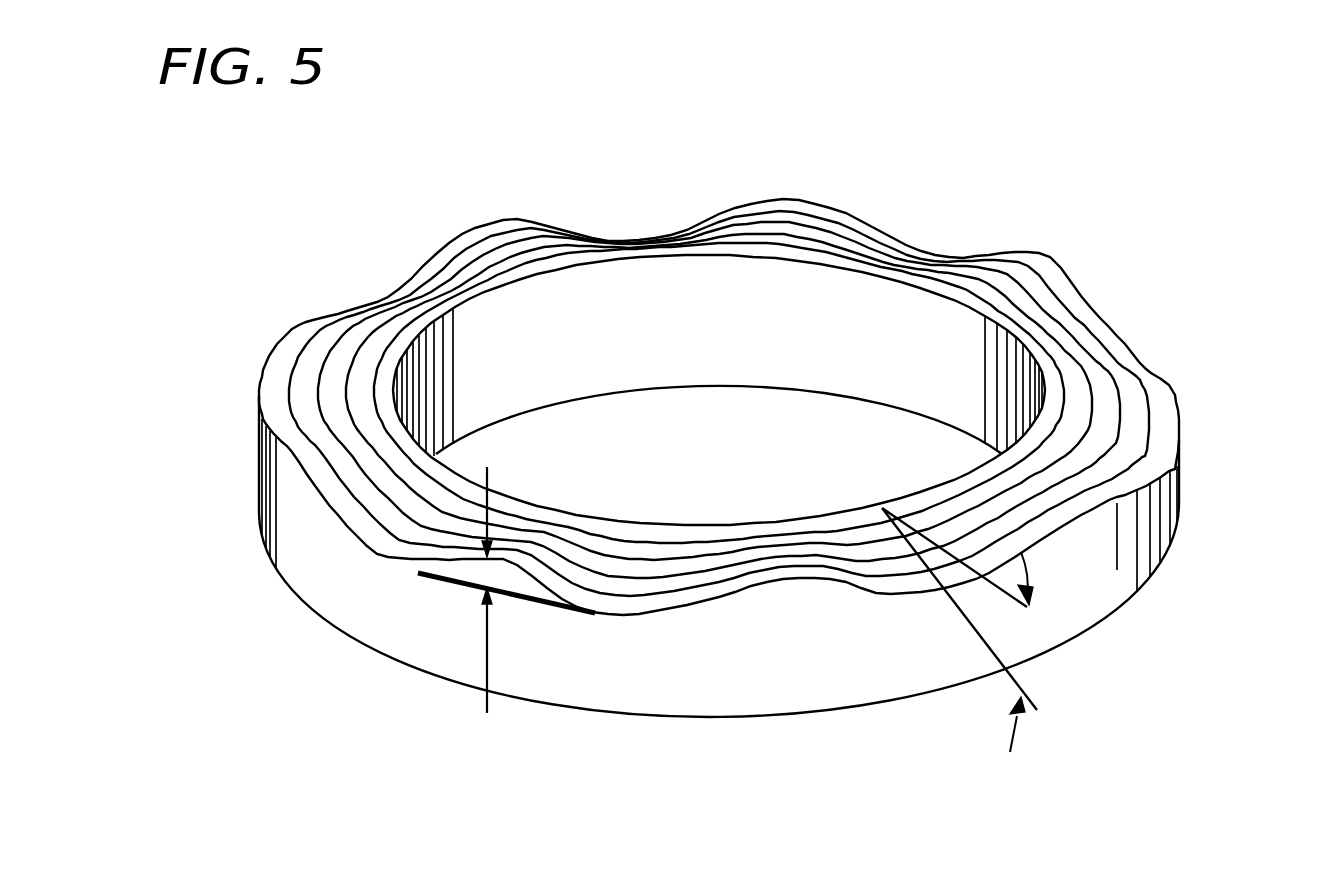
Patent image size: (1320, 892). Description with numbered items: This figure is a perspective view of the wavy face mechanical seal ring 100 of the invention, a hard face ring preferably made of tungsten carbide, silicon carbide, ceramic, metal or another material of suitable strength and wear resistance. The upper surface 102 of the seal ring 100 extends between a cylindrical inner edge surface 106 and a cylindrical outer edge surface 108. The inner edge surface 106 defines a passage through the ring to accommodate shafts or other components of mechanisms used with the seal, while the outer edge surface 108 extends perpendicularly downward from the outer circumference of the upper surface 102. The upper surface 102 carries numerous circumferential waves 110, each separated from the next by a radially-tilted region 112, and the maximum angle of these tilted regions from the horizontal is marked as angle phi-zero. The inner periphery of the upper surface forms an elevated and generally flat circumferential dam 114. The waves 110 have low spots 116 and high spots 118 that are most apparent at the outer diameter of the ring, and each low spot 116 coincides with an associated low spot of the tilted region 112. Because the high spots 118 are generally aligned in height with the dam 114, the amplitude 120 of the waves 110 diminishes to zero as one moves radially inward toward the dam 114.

The seal ring 100 is at (1133, 242).
The upper surface 102 is at (1132, 370).
The cylindrical inner edge surface 106 is at (742, 330).
The cylindrical outer edge surface 108 is at (628, 672).
The circumferential waves 110 is at (730, 208).
The radially-tilted region 112 is at (922, 530).
The circumferential dam 114 is at (440, 305).
The low spots 116 is at (935, 257).
The high spots 118 is at (793, 198).
The amplitude 120 is at (487, 657).